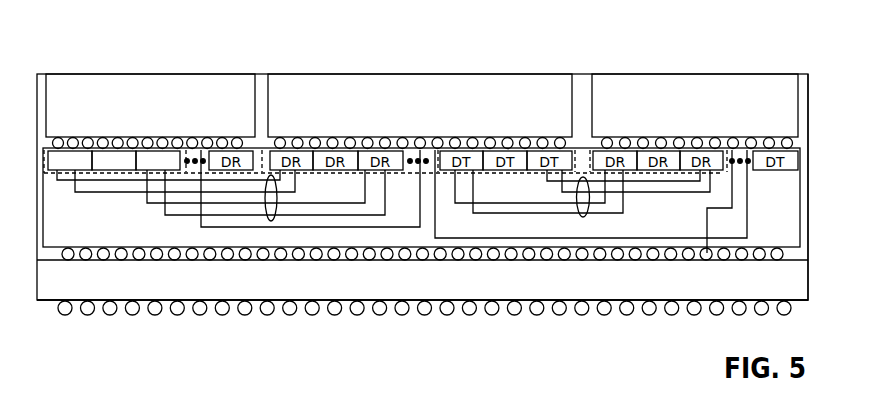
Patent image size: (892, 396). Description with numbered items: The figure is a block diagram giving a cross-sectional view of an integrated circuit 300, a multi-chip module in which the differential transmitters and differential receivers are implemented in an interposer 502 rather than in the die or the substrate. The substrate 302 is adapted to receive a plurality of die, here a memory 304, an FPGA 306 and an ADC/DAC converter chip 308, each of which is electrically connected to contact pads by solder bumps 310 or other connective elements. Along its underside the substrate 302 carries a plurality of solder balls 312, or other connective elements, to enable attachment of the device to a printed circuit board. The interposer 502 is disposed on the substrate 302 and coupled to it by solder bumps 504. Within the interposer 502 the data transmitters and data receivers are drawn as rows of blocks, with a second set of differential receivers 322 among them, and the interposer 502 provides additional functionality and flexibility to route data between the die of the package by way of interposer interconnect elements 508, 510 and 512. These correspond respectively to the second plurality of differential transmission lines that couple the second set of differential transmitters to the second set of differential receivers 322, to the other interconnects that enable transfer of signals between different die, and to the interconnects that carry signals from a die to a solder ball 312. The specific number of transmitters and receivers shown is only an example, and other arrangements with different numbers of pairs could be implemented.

The integrated circuit 300 is at (658, 73).
The substrate 302 is at (47, 303).
The memory 304 is at (202, 73).
The FPGA 306 is at (497, 73).
The ADC/DAC converter chip 308 is at (722, 73).
The solder bumps 310 is at (57, 175).
The solder balls 312 is at (110, 315).
The second set of differential receivers 322 is at (812, 274).
The interposer 502 is at (808, 198).
The solder bumps 504 is at (783, 255).
The interposer interconnect element 508 is at (281, 213).
The interposer interconnect element 510 is at (434, 231).
The interposer interconnect element 512 is at (734, 209).